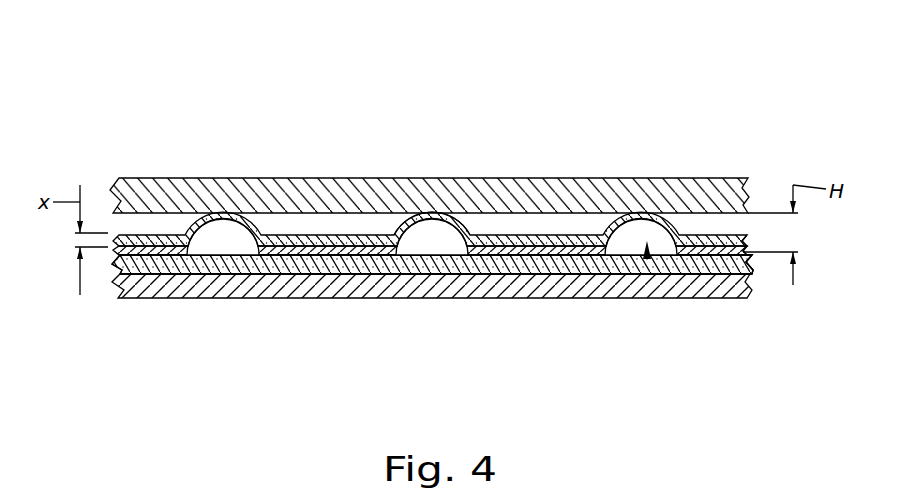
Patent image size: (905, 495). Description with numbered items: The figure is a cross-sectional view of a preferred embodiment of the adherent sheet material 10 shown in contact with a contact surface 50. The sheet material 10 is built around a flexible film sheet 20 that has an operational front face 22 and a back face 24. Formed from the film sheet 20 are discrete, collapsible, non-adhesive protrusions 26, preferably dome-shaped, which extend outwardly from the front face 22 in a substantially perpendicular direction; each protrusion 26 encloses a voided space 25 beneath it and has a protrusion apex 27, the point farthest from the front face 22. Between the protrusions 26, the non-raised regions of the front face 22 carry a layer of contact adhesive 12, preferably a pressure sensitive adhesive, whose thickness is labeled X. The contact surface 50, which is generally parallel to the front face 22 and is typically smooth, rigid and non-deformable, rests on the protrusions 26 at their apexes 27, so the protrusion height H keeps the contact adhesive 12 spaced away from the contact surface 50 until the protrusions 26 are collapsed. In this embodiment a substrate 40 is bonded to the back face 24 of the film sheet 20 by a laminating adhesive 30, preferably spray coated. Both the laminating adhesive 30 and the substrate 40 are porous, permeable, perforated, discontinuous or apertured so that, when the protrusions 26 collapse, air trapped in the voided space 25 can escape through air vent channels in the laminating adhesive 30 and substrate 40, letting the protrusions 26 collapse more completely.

The adherent sheet material 10 is at (536, 145).
The contact adhesive 12 is at (354, 258).
The film sheet 20 is at (718, 257).
The front face 22 is at (717, 252).
The back face 24 is at (330, 250).
The voided space 25 is at (646, 260).
The protrusions 26 is at (467, 216).
The protrusion apex 27 is at (428, 214).
The laminating adhesive 30 is at (750, 268).
The substrate 40 is at (492, 293).
The contact surface 50 is at (300, 192).